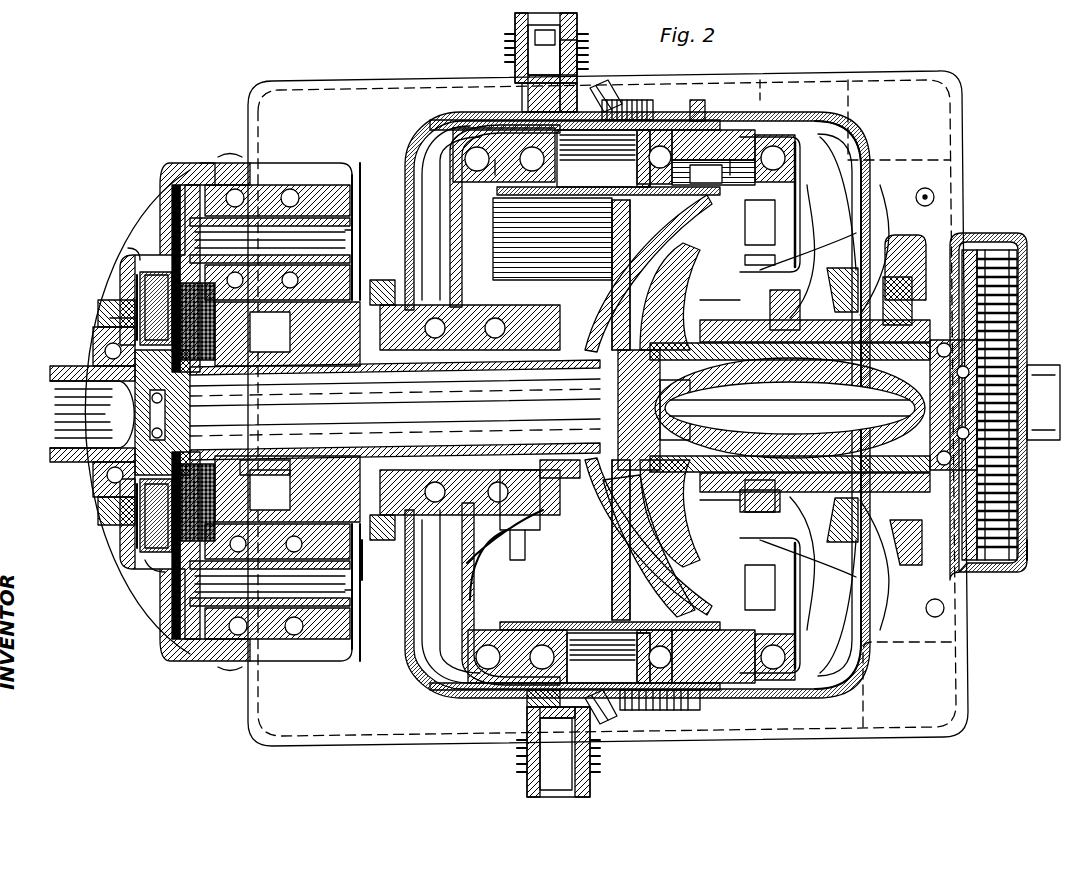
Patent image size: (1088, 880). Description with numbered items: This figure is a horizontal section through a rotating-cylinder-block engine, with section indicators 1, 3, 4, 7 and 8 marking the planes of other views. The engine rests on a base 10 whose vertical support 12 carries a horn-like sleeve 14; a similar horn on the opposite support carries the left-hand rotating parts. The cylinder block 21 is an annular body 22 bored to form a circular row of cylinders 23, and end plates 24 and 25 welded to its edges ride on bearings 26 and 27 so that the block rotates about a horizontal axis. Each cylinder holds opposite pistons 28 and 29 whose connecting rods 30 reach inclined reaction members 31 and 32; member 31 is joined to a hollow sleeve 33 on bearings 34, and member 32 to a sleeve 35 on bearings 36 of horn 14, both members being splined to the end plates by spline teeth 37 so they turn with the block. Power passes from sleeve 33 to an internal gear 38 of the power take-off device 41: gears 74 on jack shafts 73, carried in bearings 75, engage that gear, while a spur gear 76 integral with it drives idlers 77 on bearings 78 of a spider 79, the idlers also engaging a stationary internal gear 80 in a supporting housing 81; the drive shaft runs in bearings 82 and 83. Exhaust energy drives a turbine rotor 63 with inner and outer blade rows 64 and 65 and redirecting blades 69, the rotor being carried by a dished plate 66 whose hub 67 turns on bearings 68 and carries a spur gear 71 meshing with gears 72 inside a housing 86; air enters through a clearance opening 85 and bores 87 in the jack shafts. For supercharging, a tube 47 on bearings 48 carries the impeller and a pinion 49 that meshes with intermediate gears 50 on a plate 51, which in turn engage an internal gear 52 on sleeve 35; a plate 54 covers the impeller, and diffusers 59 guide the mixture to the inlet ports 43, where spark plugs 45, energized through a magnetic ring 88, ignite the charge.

The section line 1- 1 is at (112, 415).
The section line 3- 3 is at (1010, 232).
The section line 4- 4 is at (185, 165).
The section line 7- 7 is at (297, 165).
The section line 8- 8 is at (141, 240).
The base 10 is at (893, 75).
The vertical support 12 is at (52, 372).
The horn-like sleeve 14 is at (840, 336).
The cylinder block 21 is at (628, 98).
The annular body 22 is at (660, 712).
The cylinders 23 is at (640, 100).
The end plate 24 is at (456, 112).
The end plate 25 is at (830, 118).
The bearing 26 is at (522, 525).
The bearing 27 is at (790, 300).
The piston 28 is at (556, 178).
The piston 29 is at (614, 150).
The connecting rod 30 is at (500, 160).
The reaction member 31 is at (432, 145).
The reaction member 32 is at (800, 191).
The sleeve 33 is at (405, 452).
The bearings 34 is at (260, 462).
The sleeve 35 is at (832, 488).
The bearings 36 is at (660, 340).
The spline teeth 37 is at (515, 540).
The internal gear 38 is at (206, 163).
The power take-off device 41 is at (125, 225).
The inlet ports 43 is at (698, 100).
The spark plugs 45 is at (598, 724).
The tube 47 is at (800, 426).
The bearings 48 is at (1000, 338).
The pinion 49 is at (1000, 368).
The intermediate gears 50 is at (1000, 296).
The plate 51 is at (1028, 546).
The internal gear 52 is at (1012, 258).
The plate 54 is at (618, 296).
The diffusers 59 is at (692, 205).
The turbine rotor 63 is at (515, 28).
The inner row of blades 64 is at (590, 84).
The outer row of blades 65 is at (556, 32).
The dished plate 66 is at (418, 155).
The hub 67 is at (385, 305).
The bearings 68 is at (400, 300).
The redirecting blades 69 is at (580, 55).
The spur gear 71 is at (348, 262).
The gears 72 is at (315, 185).
The jack shafts 73 is at (354, 220).
The gears 74 is at (222, 165).
The bearings 75 is at (265, 178).
The spur gear 76 is at (110, 368).
The idlers 77 is at (136, 278).
The bearings 78 is at (146, 300).
The spider 79 is at (112, 322).
The stationary internal gear 80 is at (130, 250).
The supporting housing 81 is at (146, 565).
The bearing 82 is at (98, 480).
The bearing 83 is at (148, 433).
The clearance opening 85 is at (372, 548).
The housing 86 is at (356, 640).
The bores 87 is at (352, 235).
The ring 88 is at (716, 748).